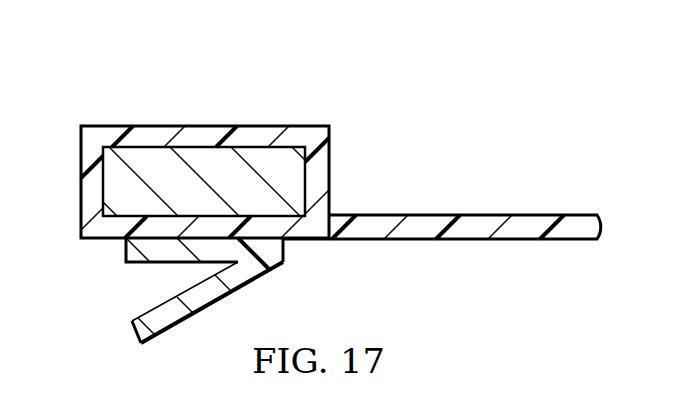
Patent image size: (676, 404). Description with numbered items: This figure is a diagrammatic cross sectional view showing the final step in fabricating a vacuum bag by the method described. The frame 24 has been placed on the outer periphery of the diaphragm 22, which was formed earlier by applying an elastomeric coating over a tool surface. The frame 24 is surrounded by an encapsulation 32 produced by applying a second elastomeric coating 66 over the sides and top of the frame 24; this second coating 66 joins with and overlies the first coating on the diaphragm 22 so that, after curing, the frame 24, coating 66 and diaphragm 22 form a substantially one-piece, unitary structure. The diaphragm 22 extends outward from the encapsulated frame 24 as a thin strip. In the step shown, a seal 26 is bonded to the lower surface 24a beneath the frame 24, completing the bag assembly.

The encapsulation 32 is at (89, 110).
The second elastomeric coating 66 is at (306, 126).
The frame 24 is at (162, 158).
The diaphragm 22 is at (432, 225).
The lower surface 24a is at (104, 239).
The seal 26 is at (252, 278).